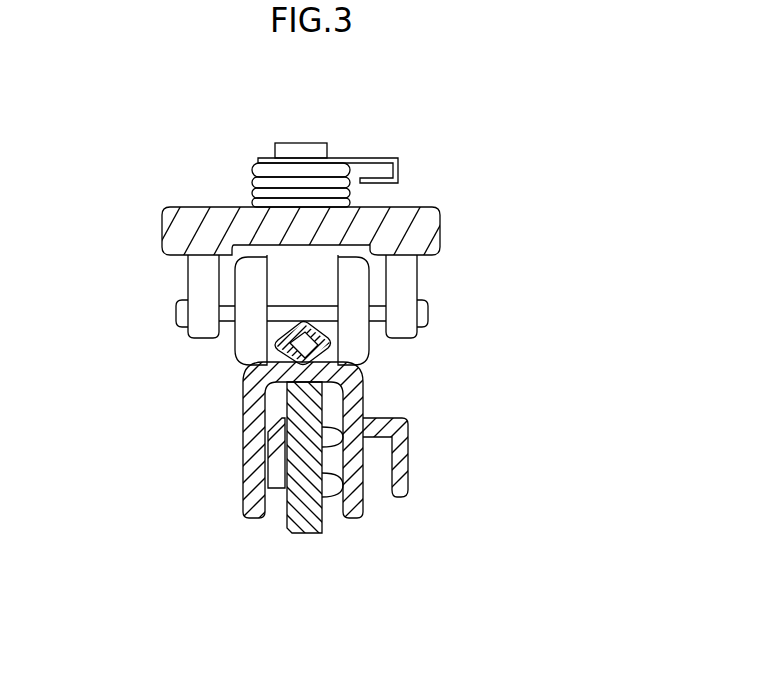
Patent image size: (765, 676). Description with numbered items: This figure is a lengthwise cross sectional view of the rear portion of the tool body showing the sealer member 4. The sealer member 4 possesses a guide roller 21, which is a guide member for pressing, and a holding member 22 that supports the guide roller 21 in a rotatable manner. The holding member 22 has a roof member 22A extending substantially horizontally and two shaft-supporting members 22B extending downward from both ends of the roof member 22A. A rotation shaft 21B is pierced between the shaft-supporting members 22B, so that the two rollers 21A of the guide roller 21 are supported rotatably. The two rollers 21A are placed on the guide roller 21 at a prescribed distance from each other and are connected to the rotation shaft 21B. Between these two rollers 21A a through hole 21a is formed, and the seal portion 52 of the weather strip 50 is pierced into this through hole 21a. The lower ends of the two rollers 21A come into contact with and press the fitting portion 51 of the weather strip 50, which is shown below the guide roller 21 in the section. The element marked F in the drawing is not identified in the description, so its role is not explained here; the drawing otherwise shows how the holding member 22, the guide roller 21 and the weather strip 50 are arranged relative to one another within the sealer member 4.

The sealer member 4 is at (302, 248).
The holding member 22 is at (238, 193).
The roof member 22A is at (178, 237).
The shaft-supporting members 22B is at (200, 280).
The guide roller 21 is at (316, 334).
The rollers 21A is at (250, 352).
The rotation shaft 21B is at (383, 306).
The through hole 21a is at (275, 332).
The seal portion 52 is at (297, 325).
The weather strip 50 is at (308, 440).
The fitting portion 51 is at (357, 510).
The blade terminal F is at (300, 513).